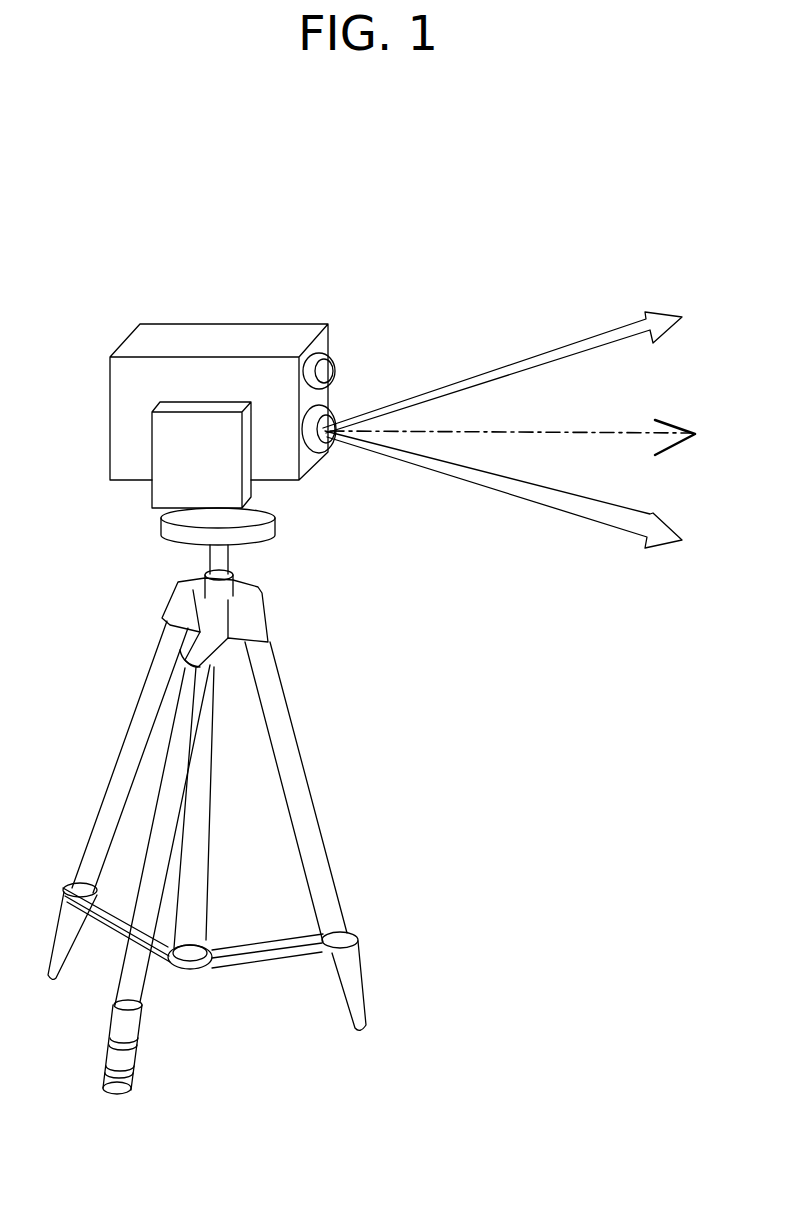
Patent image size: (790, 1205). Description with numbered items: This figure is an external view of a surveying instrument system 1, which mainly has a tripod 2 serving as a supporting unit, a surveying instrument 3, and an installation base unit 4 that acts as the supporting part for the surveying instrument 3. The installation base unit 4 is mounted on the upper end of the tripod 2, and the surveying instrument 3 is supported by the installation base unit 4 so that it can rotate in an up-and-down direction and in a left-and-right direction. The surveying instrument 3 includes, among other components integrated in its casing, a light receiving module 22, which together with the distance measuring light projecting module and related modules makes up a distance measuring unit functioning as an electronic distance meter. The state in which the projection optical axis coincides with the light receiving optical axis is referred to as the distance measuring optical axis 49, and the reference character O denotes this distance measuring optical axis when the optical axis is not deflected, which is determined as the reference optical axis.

The surveying instrument system 1 is at (219, 255).
The tripod 2 is at (122, 738).
The surveying instrument 3 is at (160, 322).
The installation base unit 4 is at (142, 541).
The light receiving module 22 is at (337, 362).
The distance measuring optical axis 49 is at (540, 355).
The reference optical axis O is at (482, 430).